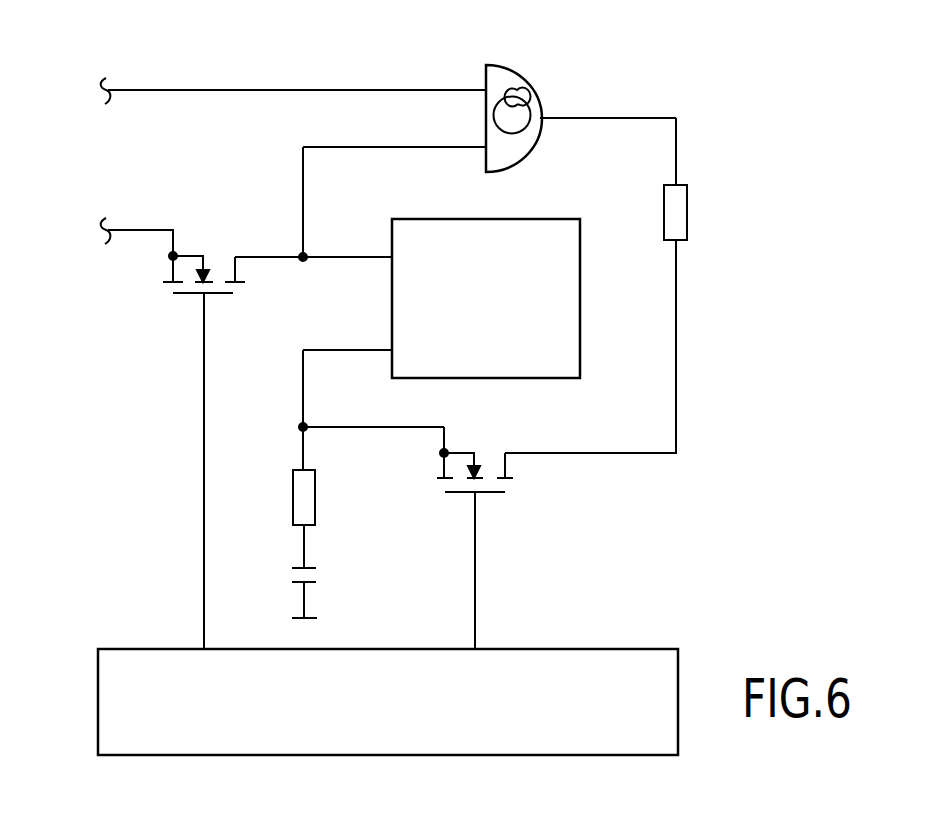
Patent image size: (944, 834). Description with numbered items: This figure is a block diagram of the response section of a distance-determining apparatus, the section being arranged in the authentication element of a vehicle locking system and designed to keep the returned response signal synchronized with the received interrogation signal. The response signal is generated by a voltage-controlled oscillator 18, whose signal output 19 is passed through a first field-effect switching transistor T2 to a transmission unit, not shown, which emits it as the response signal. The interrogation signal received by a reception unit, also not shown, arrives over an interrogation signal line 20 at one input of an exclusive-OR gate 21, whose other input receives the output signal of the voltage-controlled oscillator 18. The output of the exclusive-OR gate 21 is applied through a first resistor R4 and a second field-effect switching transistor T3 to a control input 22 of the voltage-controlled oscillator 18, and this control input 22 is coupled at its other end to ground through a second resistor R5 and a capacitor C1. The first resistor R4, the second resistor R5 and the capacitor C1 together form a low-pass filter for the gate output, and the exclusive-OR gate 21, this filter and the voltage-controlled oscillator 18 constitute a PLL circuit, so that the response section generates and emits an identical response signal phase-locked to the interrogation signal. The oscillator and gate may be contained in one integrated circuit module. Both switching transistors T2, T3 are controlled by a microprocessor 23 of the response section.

The voltage-controlled oscillator 18 is at (546, 219).
The signal output 19 is at (392, 256).
The interrogation signal line 20 is at (398, 90).
The exclusive-OR gate 21 is at (523, 78).
The control input 22 is at (391, 348).
The microprocessor 23 is at (565, 649).
The first field-effect switching transistor T2 is at (173, 430).
The second field-effect switching transistor T3 is at (482, 551).
The first resistor R4 is at (617, 285).
The second resistor R5 is at (325, 519).
The capacitor C1 is at (324, 588).